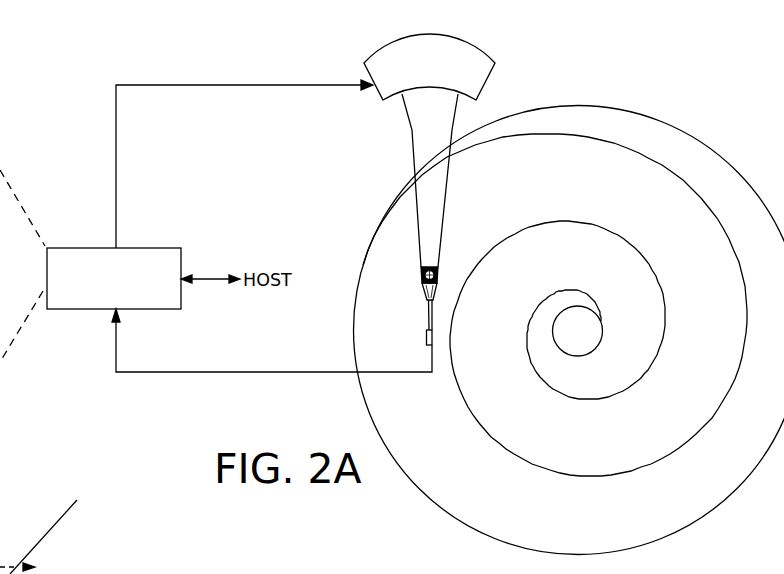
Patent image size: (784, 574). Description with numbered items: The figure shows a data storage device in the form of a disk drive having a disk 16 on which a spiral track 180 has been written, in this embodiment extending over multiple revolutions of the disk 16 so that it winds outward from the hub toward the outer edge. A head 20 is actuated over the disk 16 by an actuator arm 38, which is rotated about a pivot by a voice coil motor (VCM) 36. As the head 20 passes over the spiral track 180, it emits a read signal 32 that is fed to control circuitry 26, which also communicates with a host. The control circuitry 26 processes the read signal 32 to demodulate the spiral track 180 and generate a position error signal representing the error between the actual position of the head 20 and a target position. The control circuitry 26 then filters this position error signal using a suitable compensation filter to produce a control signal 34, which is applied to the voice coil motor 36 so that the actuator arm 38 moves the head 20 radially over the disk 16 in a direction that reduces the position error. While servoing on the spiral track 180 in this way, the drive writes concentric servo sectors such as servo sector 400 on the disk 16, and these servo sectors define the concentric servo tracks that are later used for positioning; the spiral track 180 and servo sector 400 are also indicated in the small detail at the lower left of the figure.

The disk 16 is at (718, 141).
The spiral track 180 is at (606, 138).
The head 20 is at (417, 350).
The control circuitry 26 is at (152, 248).
The read signal 32 is at (236, 372).
The control signal 34 is at (116, 152).
The voice coil motor 36 is at (383, 101).
The actuator arm 38 is at (413, 152).
The concentric servo sector 400 is at (68, 566).